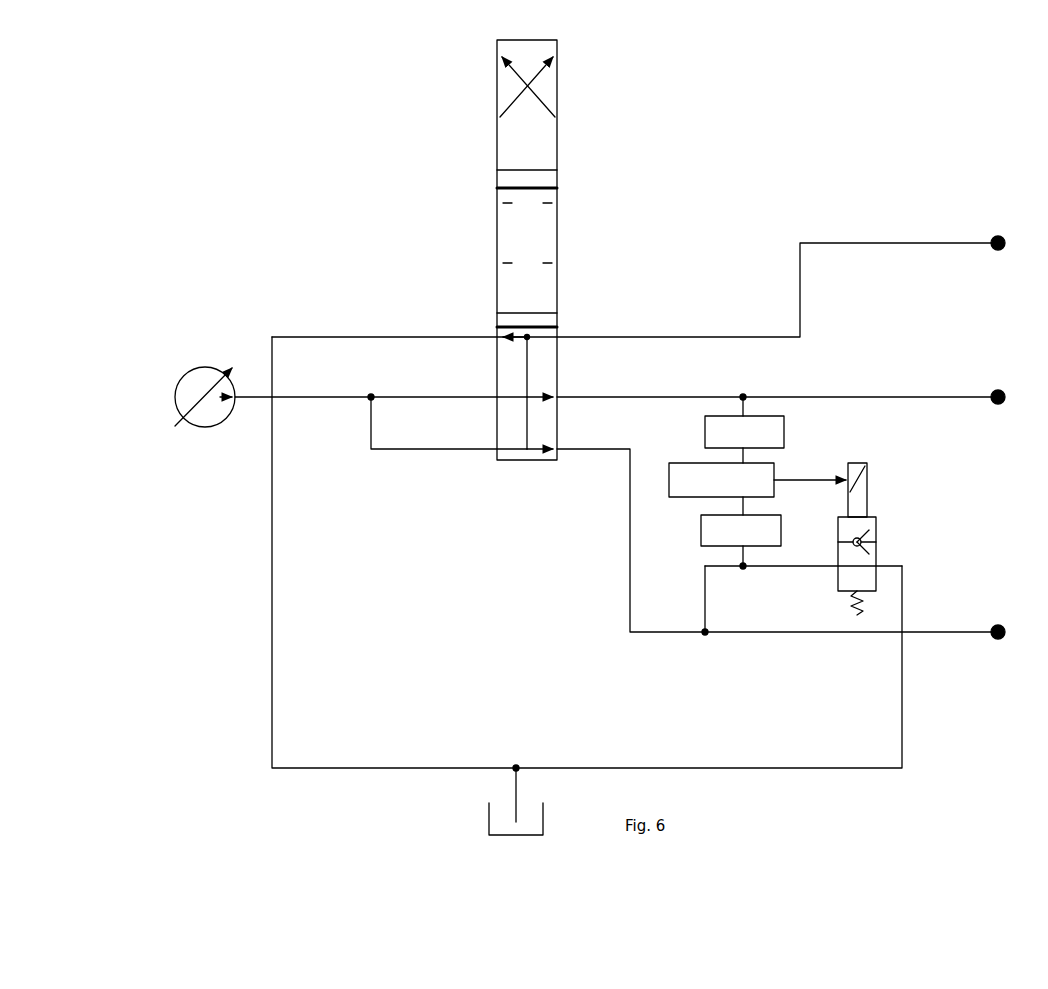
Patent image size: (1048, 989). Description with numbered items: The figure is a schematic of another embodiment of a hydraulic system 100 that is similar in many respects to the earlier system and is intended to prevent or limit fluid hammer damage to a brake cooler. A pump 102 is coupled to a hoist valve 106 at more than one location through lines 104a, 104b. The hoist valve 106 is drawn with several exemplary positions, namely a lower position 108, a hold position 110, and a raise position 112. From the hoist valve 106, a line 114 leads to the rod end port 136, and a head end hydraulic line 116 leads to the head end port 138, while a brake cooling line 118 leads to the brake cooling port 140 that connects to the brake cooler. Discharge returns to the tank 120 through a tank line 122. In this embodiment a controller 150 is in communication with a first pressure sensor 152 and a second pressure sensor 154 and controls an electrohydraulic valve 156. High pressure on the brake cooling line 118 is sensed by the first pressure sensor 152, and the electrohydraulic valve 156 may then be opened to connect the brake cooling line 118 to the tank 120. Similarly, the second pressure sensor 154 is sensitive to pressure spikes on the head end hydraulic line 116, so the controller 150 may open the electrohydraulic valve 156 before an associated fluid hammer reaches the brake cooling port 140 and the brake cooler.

The hydraulic system 100 is at (676, 183).
The pump 102 is at (170, 385).
The line 104a is at (432, 393).
The line 104b is at (463, 447).
The hoist valve 106 is at (480, 468).
The lower position 108 is at (497, 150).
The hold position 110 is at (557, 232).
The raise position 112 is at (553, 462).
The line 114 is at (688, 335).
The head end hydraulic line 116 is at (598, 395).
The brake cooling line 118 is at (672, 640).
The tank 120 is at (545, 825).
The tank line 122 is at (745, 762).
The rod end port 136 is at (1006, 243).
The head end port 138 is at (1006, 397).
The brake cooling port 140 is at (1006, 632).
The controller 150 is at (693, 497).
The first pressure sensor 152 is at (701, 540).
The second pressure sensor 154 is at (705, 435).
The electrohydraulic valve 156 is at (876, 522).